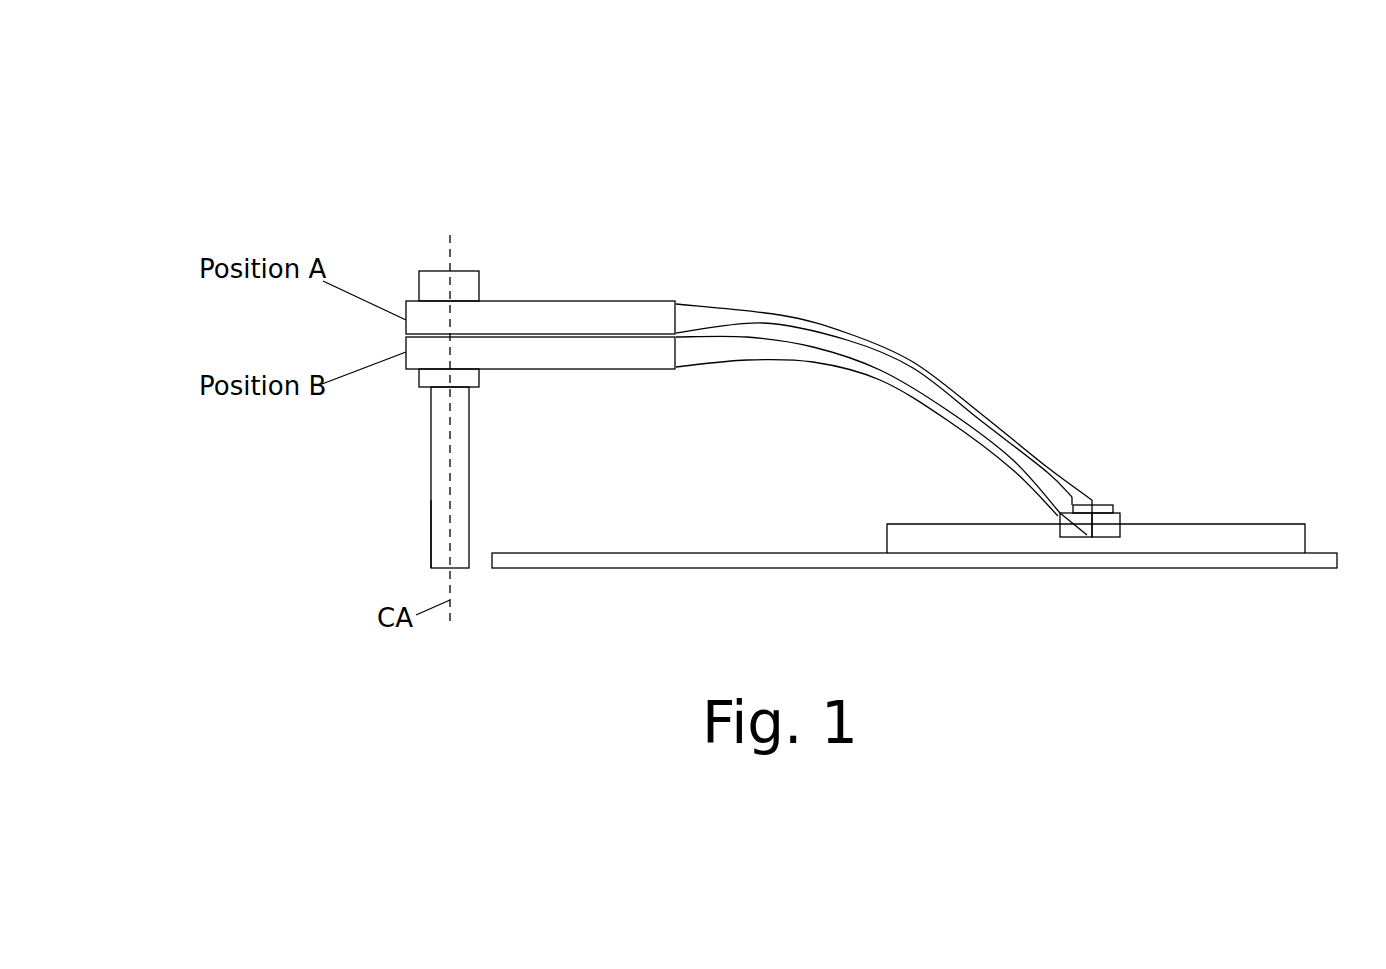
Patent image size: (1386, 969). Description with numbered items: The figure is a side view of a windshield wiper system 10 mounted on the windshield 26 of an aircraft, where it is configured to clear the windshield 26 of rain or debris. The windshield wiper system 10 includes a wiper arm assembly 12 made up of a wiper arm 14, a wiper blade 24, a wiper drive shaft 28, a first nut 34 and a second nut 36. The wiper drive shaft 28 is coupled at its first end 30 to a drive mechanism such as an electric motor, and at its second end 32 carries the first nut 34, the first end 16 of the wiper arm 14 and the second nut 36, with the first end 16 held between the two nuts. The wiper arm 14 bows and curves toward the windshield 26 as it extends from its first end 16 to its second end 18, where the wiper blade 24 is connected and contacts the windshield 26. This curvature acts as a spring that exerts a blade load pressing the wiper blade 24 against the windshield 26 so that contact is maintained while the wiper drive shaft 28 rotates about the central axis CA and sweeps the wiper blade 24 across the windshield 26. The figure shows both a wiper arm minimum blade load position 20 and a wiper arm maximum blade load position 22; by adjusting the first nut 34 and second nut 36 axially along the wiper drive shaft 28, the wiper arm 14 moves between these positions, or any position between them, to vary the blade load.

The windshield wiper system 10 is at (955, 138).
The wiper arm assembly 12 is at (795, 194).
The wiper arm 14 is at (684, 253).
The first end 16 is at (514, 279).
The second end 18 is at (1106, 466).
The wiper arm minimum blade load position 20 is at (925, 342).
The wiper arm maximum blade load position 22 is at (858, 400).
The wiper blade 24 is at (1262, 503).
The windshield 26 is at (661, 592).
The wiper drive shaft 28 is at (409, 468).
The first end 30 is at (409, 550).
The second end 32 is at (469, 210).
The first nut 34 is at (401, 390).
The second nut 36 is at (427, 258).